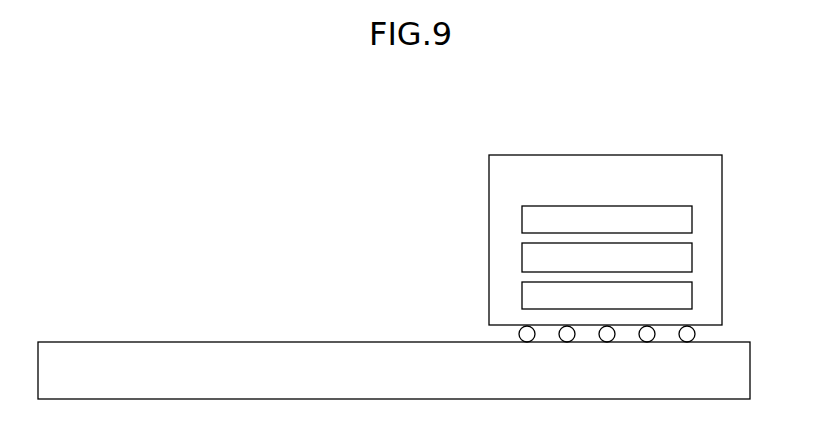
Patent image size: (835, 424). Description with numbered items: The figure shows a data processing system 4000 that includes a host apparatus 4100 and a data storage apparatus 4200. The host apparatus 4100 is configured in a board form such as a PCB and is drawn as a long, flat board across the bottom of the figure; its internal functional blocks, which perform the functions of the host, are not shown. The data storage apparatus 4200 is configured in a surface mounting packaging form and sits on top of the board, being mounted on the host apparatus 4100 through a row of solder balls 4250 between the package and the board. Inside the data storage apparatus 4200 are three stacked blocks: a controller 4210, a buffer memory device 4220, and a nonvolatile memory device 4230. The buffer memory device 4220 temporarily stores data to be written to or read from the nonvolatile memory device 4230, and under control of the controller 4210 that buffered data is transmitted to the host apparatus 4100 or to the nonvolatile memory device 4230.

The data processing system 4000 is at (102, 97).
The host apparatus 4100 is at (394, 370).
The data storage apparatus 4200 is at (605, 240).
The controller 4210 is at (607, 220).
The buffer memory device 4220 is at (607, 257).
The nonvolatile memory device 4230 is at (607, 295).
The solder ball 4250 is at (705, 334).